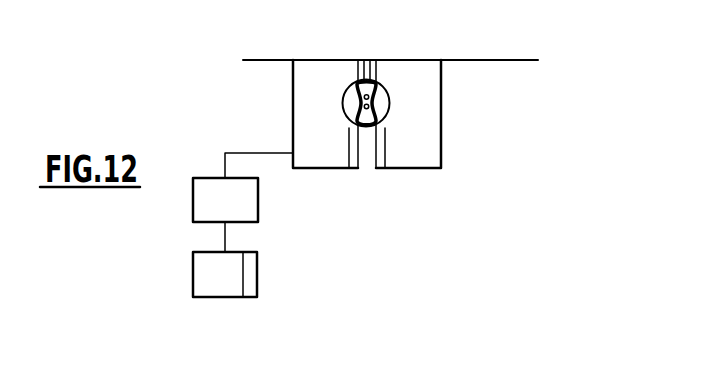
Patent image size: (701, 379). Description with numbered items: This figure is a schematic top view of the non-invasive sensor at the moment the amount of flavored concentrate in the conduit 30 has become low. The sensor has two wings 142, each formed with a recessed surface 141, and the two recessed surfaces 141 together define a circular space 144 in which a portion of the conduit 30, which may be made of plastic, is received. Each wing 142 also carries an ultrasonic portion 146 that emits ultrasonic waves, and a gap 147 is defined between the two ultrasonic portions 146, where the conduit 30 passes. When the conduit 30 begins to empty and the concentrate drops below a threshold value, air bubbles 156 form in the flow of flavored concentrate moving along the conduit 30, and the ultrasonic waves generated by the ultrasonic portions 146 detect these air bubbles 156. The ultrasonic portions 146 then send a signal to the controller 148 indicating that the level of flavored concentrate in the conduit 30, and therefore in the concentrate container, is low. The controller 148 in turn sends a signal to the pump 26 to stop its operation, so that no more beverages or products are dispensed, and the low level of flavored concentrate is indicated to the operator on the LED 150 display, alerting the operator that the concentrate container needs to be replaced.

The recessed surface 141 is at (347, 101).
The wings 142 is at (307, 113).
The circular space 144 is at (348, 103).
The ultrasonic portion 146 is at (348, 160).
The gap 147 is at (370, 165).
The air bubbles 156 is at (366, 94).
The conduit 30 is at (372, 110).
The controller 148 is at (243, 212).
The pump 26 is at (233, 285).
The LED 150 is at (253, 272).